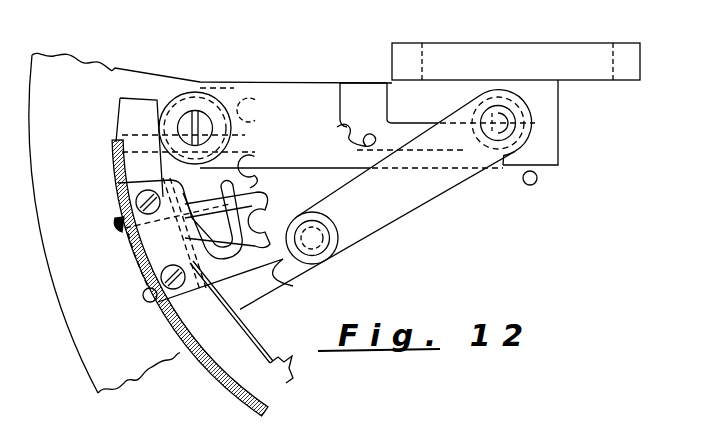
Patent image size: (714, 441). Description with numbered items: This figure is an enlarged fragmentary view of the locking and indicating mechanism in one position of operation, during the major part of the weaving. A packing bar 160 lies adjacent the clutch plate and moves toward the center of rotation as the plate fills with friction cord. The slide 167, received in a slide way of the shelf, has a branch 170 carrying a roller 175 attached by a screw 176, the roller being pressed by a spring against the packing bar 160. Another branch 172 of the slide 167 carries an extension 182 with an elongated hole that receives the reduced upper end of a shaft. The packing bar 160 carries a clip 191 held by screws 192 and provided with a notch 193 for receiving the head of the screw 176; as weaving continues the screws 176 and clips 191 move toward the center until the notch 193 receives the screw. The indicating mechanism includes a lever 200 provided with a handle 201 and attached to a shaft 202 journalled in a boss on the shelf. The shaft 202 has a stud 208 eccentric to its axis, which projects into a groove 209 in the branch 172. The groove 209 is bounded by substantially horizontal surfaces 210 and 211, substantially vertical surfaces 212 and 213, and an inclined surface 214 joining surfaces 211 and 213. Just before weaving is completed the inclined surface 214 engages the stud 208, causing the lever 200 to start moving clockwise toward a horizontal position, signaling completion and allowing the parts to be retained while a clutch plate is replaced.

The packing bar 160 is at (133, 107).
The slide 167 is at (559, 151).
The branch 170 is at (214, 82).
The branch 172 is at (302, 82).
The roller 175 is at (221, 100).
The screw 176 is at (191, 111).
The extension 182 is at (568, 47).
The clip 191 is at (262, 195).
The screw 192 is at (125, 220).
The notch 193 is at (223, 238).
The lever 200 is at (385, 233).
The handle 201 is at (320, 254).
The shaft 202 is at (500, 118).
The stud 208 is at (535, 123).
The groove 209 is at (360, 90).
The horizontal surface 210 is at (420, 114).
The horizontal surface 211 is at (372, 144).
The vertical surface 212 is at (388, 107).
The vertical surface 213 is at (338, 107).
The inclined surface 214 is at (338, 128).